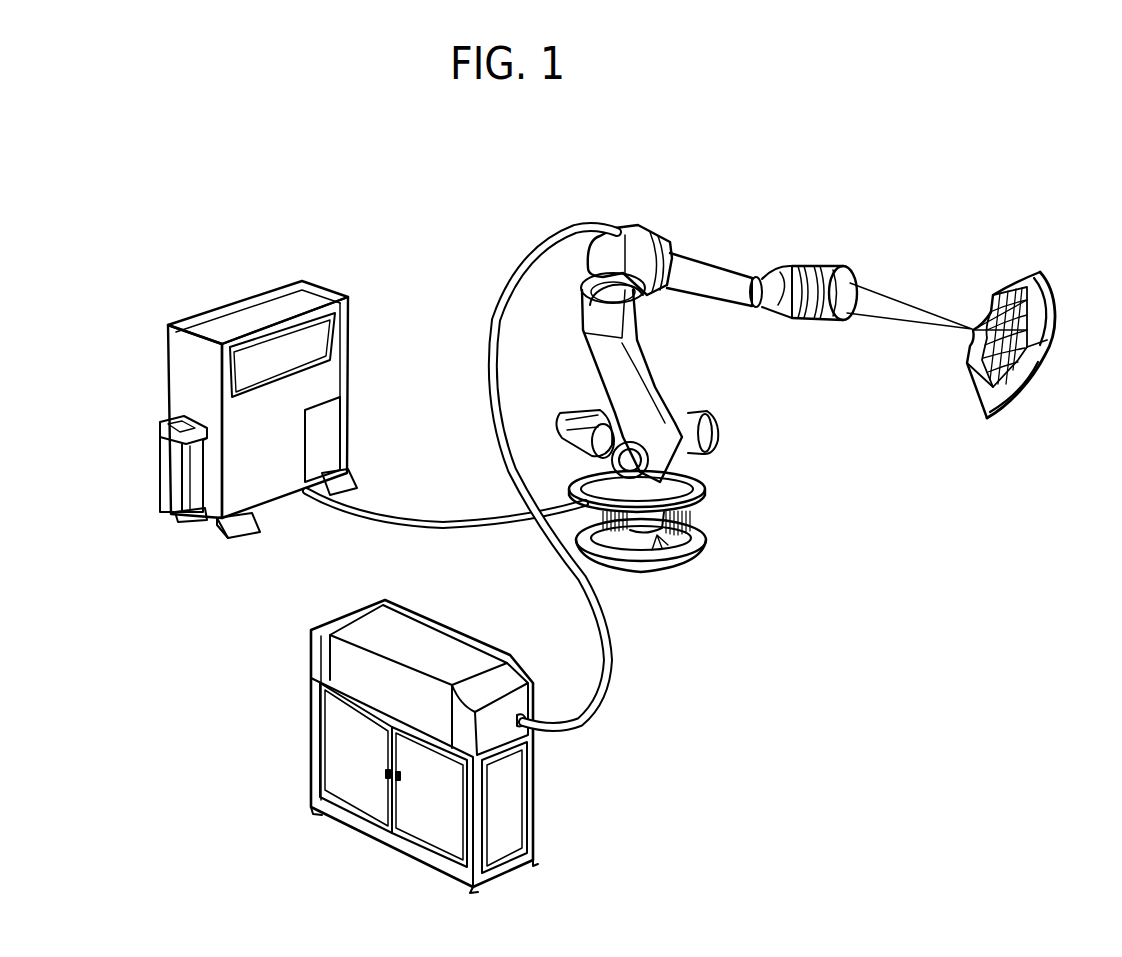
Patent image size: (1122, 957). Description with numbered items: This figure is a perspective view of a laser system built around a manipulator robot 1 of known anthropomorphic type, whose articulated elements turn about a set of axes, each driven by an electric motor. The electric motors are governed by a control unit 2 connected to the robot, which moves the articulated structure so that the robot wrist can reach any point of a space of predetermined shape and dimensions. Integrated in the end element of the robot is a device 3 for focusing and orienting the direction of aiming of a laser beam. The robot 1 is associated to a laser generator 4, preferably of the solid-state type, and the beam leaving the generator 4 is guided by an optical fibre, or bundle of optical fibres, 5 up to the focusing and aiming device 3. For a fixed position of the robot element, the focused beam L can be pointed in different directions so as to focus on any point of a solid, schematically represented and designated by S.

The manipulator robot 1 is at (745, 223).
The control unit 2 is at (253, 280).
The device for focusing and orienting the direction of aiming of a laser beam 3 is at (808, 332).
The laser generator 4 is at (540, 803).
The optical fibre 5 is at (525, 248).
The focused beam L is at (887, 303).
The solid S is at (1053, 310).